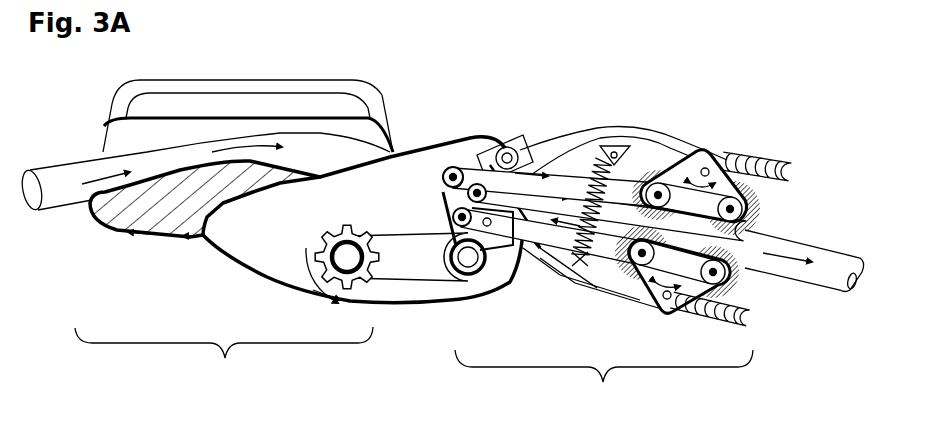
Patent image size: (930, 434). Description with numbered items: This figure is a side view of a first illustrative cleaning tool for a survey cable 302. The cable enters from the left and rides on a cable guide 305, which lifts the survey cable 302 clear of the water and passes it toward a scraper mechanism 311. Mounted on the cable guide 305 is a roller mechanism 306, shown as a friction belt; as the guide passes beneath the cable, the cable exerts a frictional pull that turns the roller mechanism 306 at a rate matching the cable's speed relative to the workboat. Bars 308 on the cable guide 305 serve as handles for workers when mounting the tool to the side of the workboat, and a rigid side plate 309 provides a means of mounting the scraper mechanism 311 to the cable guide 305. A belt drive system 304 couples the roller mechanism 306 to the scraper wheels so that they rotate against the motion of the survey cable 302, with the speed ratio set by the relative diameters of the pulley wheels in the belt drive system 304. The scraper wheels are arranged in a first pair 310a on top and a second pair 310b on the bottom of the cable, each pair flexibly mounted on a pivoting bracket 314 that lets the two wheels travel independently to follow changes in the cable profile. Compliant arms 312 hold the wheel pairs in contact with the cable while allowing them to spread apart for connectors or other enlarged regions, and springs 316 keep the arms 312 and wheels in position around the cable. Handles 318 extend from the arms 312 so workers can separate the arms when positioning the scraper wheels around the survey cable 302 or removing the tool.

The survey cable 302 is at (68, 163).
The belt drive system 304 is at (418, 285).
The cable guide 305 is at (224, 359).
The roller mechanism 306 is at (90, 222).
The bars 308 is at (283, 80).
The rigid side plate 309 is at (253, 268).
The first pair of scraper wheels 310a is at (727, 160).
The second pair of scraper wheels 310b is at (677, 310).
The scraper mechanism 311 is at (604, 381).
The compliant arms 312 is at (612, 127).
The bracket 314 is at (703, 150).
The springs 316 is at (580, 248).
The handles 318 is at (765, 155).